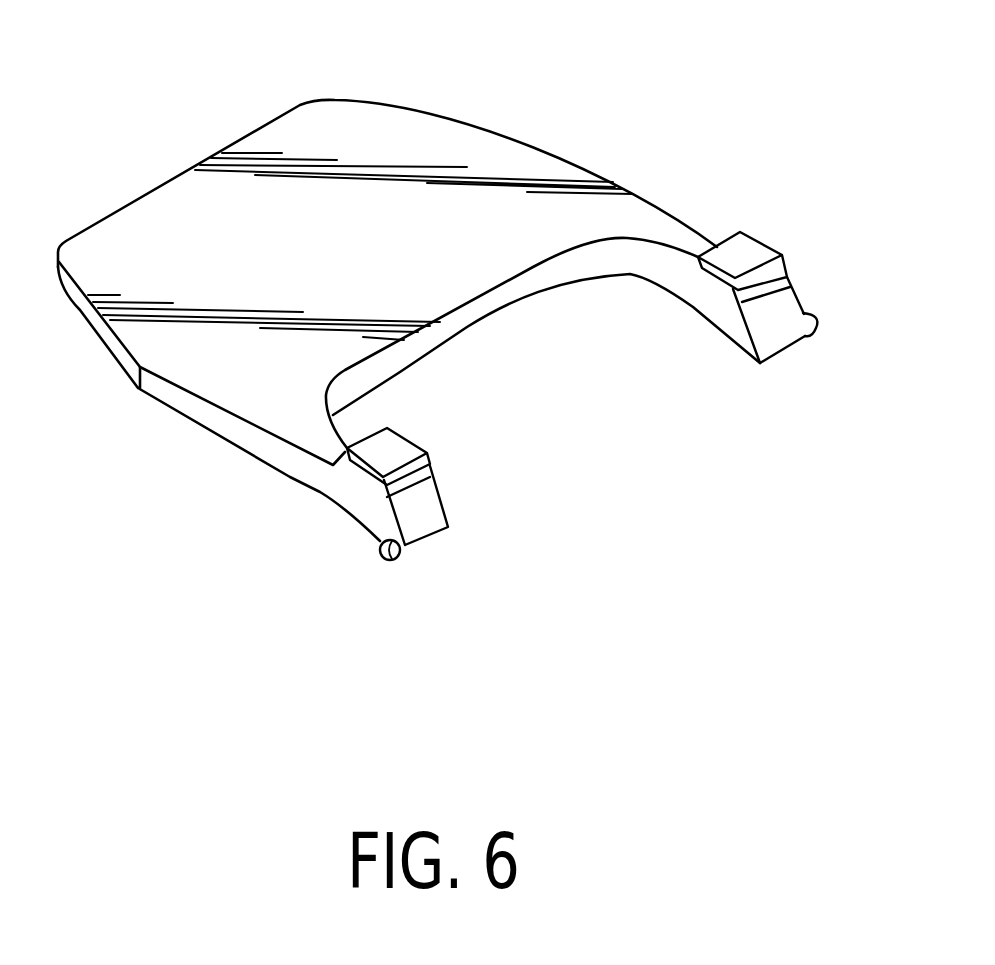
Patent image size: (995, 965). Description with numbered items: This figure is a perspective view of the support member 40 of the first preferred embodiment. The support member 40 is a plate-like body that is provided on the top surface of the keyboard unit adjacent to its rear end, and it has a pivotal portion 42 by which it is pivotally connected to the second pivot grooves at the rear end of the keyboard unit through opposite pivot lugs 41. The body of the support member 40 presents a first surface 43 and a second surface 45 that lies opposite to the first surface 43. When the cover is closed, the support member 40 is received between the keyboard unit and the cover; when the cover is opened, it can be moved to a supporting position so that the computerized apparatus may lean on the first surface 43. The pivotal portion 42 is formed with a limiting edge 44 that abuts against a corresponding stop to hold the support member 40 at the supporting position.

The support member 40 is at (192, 420).
The pivot lug 41 is at (817, 317).
The pivotal portion 42 is at (783, 357).
The first surface 43 is at (237, 452).
The limiting edge 44 is at (773, 267).
The second surface 45 is at (367, 137).